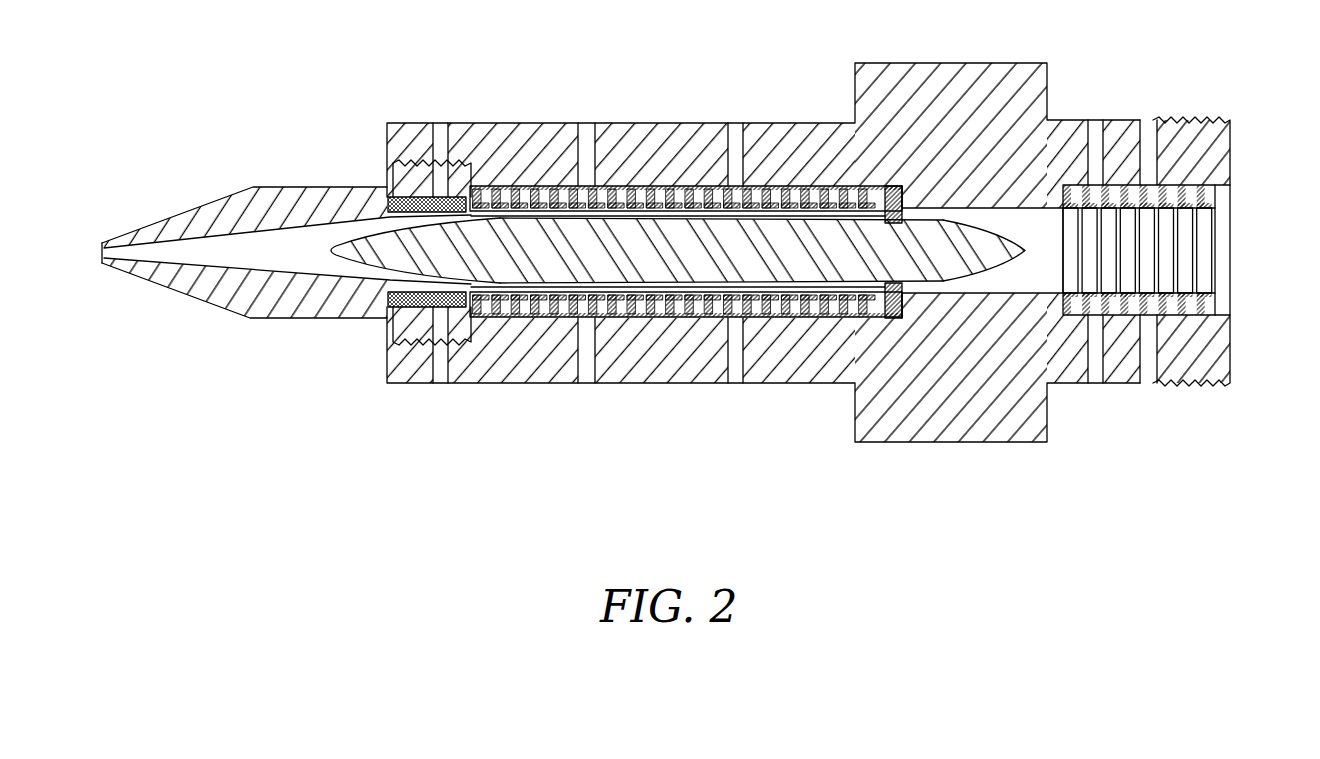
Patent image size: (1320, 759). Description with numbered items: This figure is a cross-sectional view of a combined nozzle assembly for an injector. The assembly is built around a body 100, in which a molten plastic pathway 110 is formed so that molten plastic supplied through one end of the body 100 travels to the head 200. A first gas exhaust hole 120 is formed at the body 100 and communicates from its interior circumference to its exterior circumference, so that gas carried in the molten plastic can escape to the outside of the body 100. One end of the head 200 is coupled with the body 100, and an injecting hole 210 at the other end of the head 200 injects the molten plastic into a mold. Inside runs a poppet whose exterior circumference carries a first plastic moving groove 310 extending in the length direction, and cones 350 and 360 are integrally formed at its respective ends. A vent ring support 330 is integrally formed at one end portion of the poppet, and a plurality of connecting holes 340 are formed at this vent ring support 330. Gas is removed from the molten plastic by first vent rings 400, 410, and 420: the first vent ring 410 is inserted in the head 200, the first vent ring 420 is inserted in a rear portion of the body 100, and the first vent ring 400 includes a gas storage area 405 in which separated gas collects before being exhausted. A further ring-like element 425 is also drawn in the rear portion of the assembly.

The body 100 is at (845, 232).
The molten plastic pathway 110 is at (1225, 252).
The first gas exhaust hole 120 is at (587, 123).
The head 200 is at (245, 219).
The injecting hole 210 is at (102, 252).
The first plastic moving groove 310 is at (675, 358).
The vent ring support 330 is at (902, 220).
The connecting hole 340 is at (918, 209).
The cone 350 is at (372, 258).
The cone 360 is at (932, 268).
The first vent ring 400 is at (653, 190).
The gas storage area 405 is at (700, 170).
The first vent ring 410 is at (393, 177).
The first vent ring 420 is at (1202, 185).
The seal stack 425 is at (1212, 197).